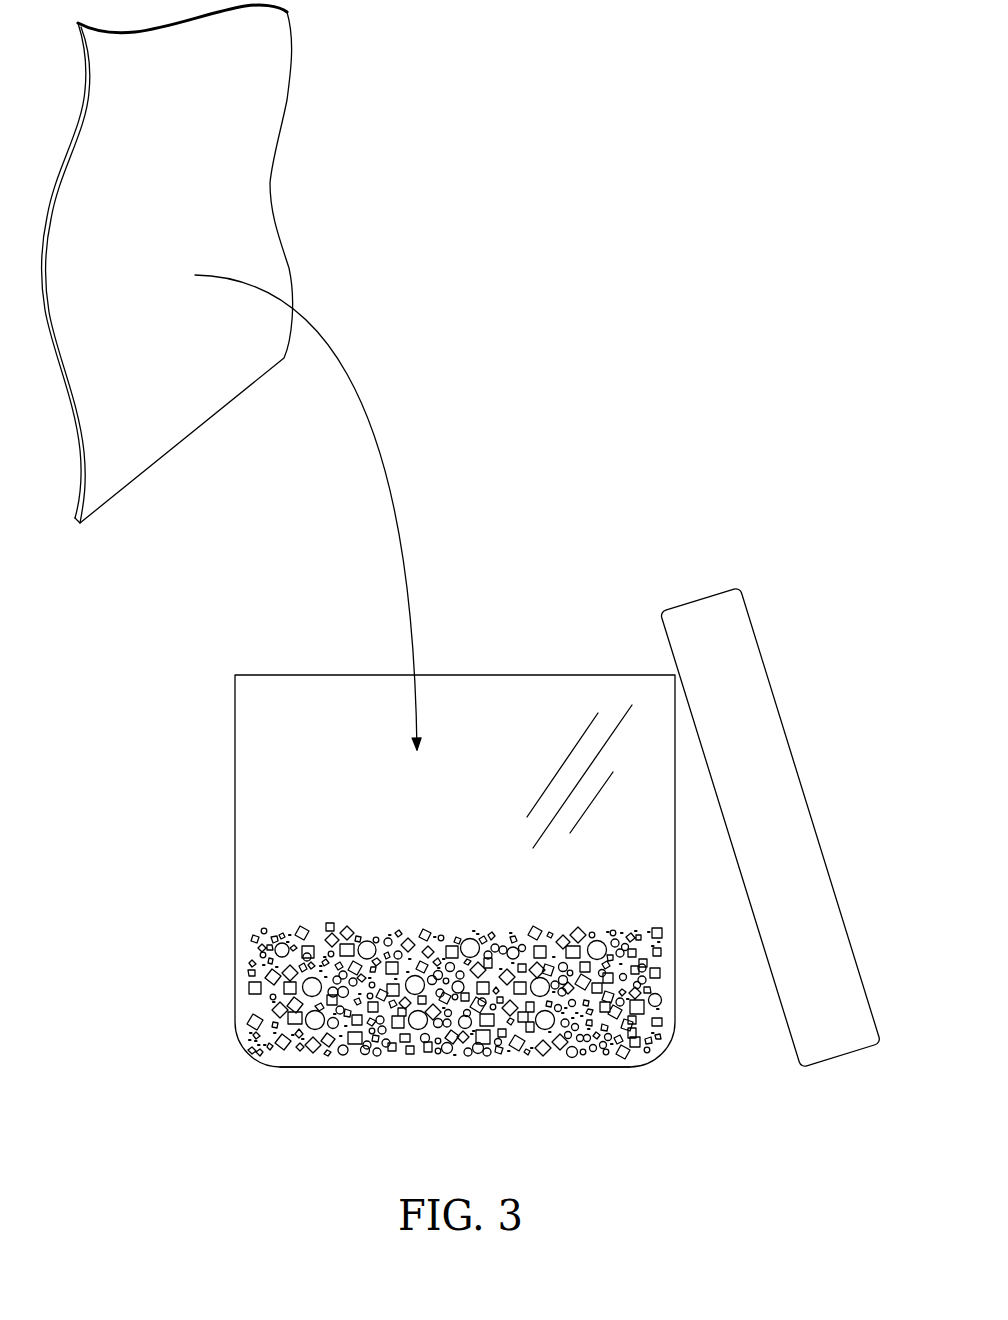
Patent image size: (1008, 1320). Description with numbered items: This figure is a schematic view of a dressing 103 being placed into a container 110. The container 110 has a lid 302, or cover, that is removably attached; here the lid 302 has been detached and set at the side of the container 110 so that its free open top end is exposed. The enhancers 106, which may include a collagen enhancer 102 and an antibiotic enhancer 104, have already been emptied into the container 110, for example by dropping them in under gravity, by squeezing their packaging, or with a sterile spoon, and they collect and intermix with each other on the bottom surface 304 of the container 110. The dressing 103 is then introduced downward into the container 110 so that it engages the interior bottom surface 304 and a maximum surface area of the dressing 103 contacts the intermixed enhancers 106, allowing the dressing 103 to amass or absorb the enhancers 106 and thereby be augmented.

The dressing 103 is at (200, 145).
The container 110 is at (473, 757).
The lid 302 is at (768, 683).
The bottom surface 304 is at (422, 1068).
The collagen enhancer 102 is at (487, 937).
The antibiotic enhancer 104 is at (427, 923).
The enhancers 106 is at (528, 930).